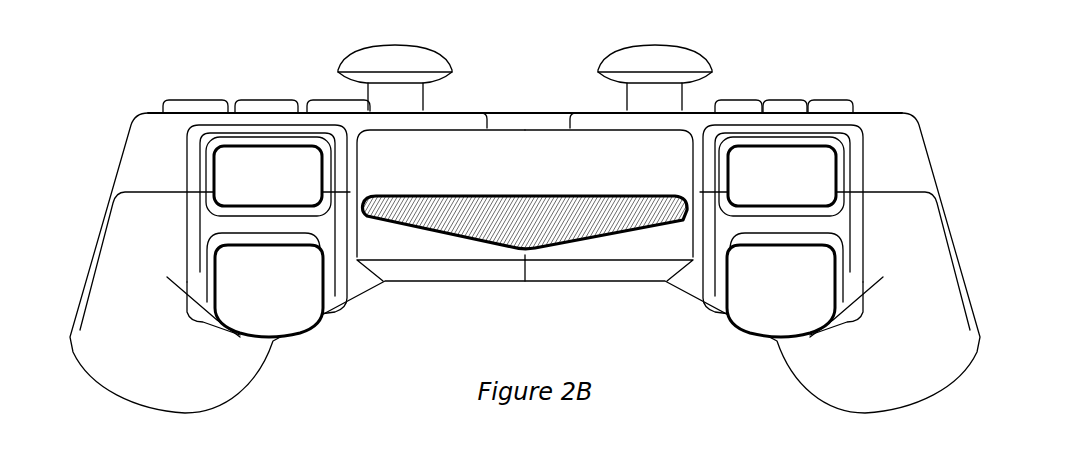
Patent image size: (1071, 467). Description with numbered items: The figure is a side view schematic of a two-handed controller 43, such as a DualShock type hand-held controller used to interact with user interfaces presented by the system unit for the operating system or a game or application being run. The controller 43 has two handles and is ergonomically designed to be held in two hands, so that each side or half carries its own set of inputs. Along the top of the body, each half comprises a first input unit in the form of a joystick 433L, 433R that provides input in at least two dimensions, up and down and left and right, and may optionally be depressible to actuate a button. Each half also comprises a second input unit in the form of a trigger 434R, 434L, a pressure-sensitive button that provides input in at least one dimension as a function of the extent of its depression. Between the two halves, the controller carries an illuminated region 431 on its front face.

The two-handed controller 43 is at (512, 47).
The illuminated region 431 is at (584, 224).
The joystick 433L is at (288, 154).
The joystick 433R is at (810, 154).
The trigger 434R is at (264, 362).
The trigger 434L is at (787, 362).